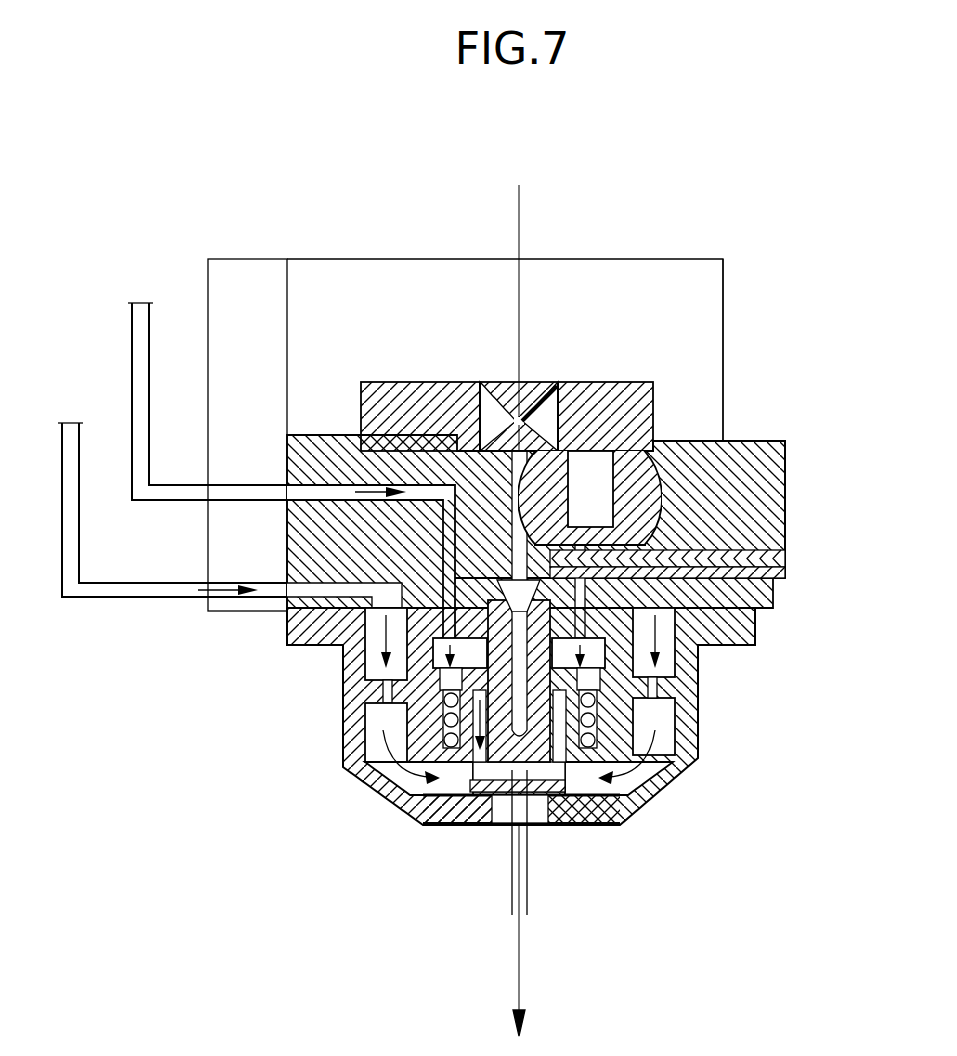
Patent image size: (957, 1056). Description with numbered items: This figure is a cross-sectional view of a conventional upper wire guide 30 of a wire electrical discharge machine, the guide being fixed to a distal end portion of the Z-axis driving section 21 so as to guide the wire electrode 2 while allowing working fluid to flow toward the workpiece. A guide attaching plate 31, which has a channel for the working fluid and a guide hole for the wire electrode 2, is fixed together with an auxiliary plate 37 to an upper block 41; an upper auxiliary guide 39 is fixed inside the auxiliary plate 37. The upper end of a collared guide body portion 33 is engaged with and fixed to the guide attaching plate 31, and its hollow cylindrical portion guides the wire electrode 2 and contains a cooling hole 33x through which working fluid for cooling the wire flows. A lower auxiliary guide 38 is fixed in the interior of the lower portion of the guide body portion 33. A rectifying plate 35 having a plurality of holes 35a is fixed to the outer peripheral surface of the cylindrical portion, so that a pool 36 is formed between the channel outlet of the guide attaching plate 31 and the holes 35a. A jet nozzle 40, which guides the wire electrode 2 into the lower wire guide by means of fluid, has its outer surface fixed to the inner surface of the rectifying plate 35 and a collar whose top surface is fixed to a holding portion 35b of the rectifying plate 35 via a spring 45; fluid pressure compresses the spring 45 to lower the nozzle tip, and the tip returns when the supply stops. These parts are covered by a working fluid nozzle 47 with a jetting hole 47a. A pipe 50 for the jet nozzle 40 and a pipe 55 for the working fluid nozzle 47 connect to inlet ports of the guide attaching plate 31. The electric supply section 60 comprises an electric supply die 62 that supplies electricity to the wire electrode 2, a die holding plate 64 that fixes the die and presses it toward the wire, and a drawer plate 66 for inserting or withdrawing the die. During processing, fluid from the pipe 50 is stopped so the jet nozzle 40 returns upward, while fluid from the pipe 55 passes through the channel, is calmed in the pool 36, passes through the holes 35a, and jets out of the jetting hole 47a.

The wire electrode 2 is at (522, 268).
The Z-axis driving section 21 is at (243, 259).
The upper wire guide 30 is at (745, 272).
The guide attaching plate 31 is at (313, 435).
The guide body portion 33 is at (470, 722).
The cooling hole 33x is at (565, 795).
The rectifying plate 35 is at (660, 662).
The holes 35a is at (657, 690).
The holding portion 35b is at (463, 790).
The pool 36 is at (427, 657).
The auxiliary plate 37 is at (622, 382).
The lower auxiliary guide 38 is at (530, 795).
The upper auxiliary guide 39 is at (500, 400).
The jet nozzle 40 is at (628, 797).
The upper block 41 is at (723, 345).
The spring 45 is at (662, 742).
The working fluid nozzle 47 is at (388, 801).
The jetting hole 47a is at (492, 825).
The pipe 50 is at (140, 300).
The pipe 55 is at (128, 600).
The electric supply section 60 is at (680, 401).
The electric supply die 62 is at (640, 498).
The die holding plate 64 is at (775, 546).
The drawer plate 66 is at (775, 566).